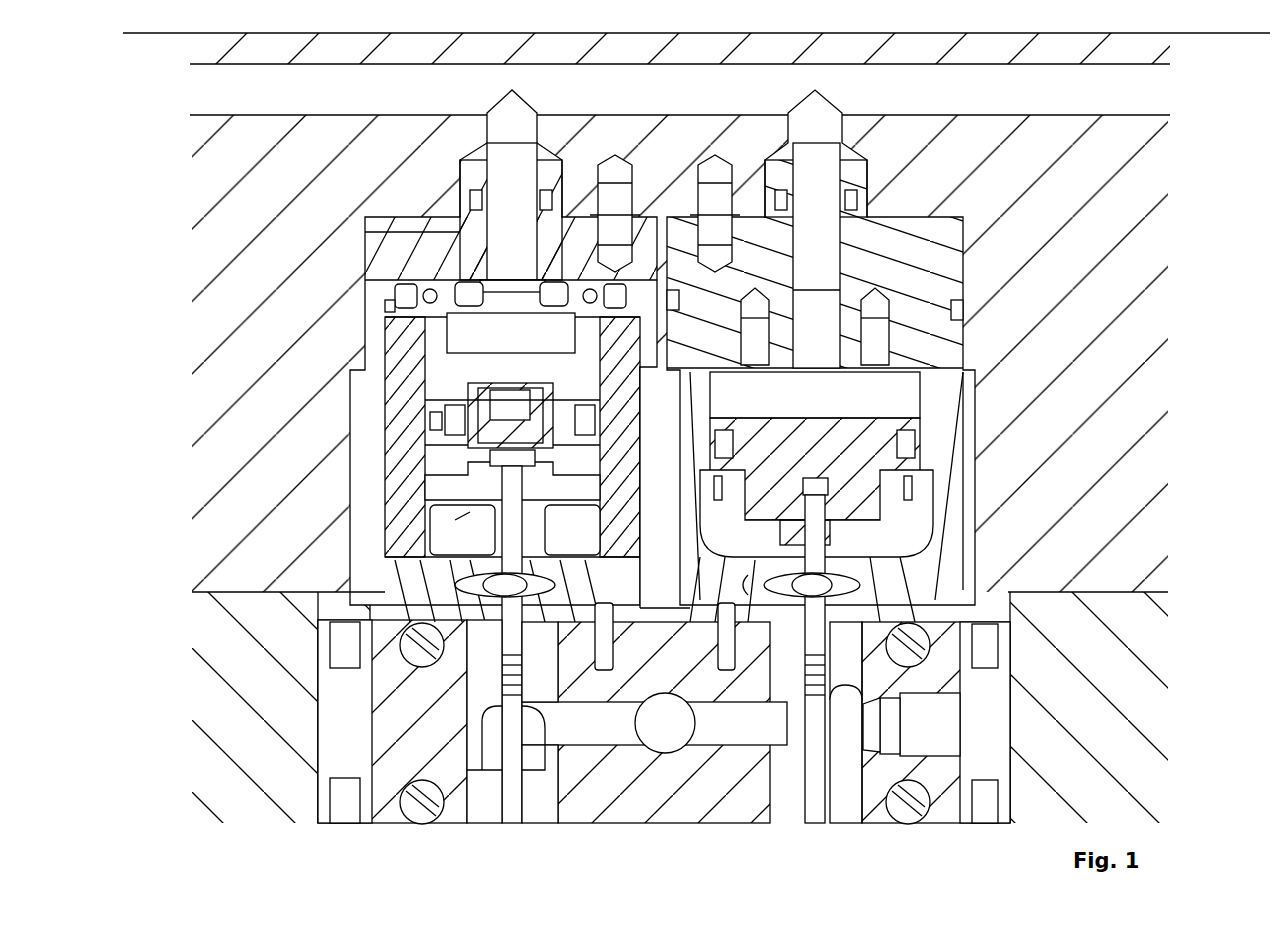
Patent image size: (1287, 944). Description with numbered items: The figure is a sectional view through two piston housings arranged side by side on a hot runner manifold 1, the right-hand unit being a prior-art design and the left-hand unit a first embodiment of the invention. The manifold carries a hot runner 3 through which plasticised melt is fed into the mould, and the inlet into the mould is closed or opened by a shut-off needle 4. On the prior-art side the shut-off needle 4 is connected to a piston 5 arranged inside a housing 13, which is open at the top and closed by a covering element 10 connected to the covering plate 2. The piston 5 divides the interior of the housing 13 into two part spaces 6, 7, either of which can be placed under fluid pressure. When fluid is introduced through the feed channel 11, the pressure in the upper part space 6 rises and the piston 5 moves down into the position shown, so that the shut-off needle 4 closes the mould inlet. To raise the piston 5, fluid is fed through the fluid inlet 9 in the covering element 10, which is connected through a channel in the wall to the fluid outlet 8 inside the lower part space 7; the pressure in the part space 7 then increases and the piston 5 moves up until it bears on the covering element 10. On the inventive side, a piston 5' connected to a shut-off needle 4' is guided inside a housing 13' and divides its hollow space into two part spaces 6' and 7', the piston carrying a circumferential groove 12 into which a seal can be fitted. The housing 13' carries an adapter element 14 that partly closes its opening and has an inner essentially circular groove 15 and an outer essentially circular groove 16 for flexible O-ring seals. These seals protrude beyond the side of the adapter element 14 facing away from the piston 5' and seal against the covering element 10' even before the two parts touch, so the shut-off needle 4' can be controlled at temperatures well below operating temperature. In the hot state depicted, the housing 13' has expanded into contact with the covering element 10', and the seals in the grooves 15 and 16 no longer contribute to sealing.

The hot runner manifold 1 is at (392, 722).
The covering plate 2 is at (680, 353).
The hot runner 3 is at (654, 713).
The shut-off needle 4 is at (798, 650).
The shut-off needle 4' is at (525, 661).
The piston 5 is at (866, 443).
The piston 5' is at (457, 526).
The part space 6 is at (815, 395).
The part space 6' is at (502, 347).
The part space 7 is at (816, 515).
The part space 7' is at (515, 532).
The fluid outlet 8 is at (917, 482).
The fluid inlet 9 is at (960, 355).
The covering element 10 is at (856, 347).
The covering element 10' is at (478, 347).
The feed channel 11 is at (816, 255).
The circumferential groove 12 is at (435, 432).
The housing 13 is at (1025, 481).
The housing 13' is at (361, 437).
The adapter element 14 is at (420, 316).
The inner essentially circular groove 15 is at (470, 283).
The outer essentially circular groove 16 is at (400, 288).